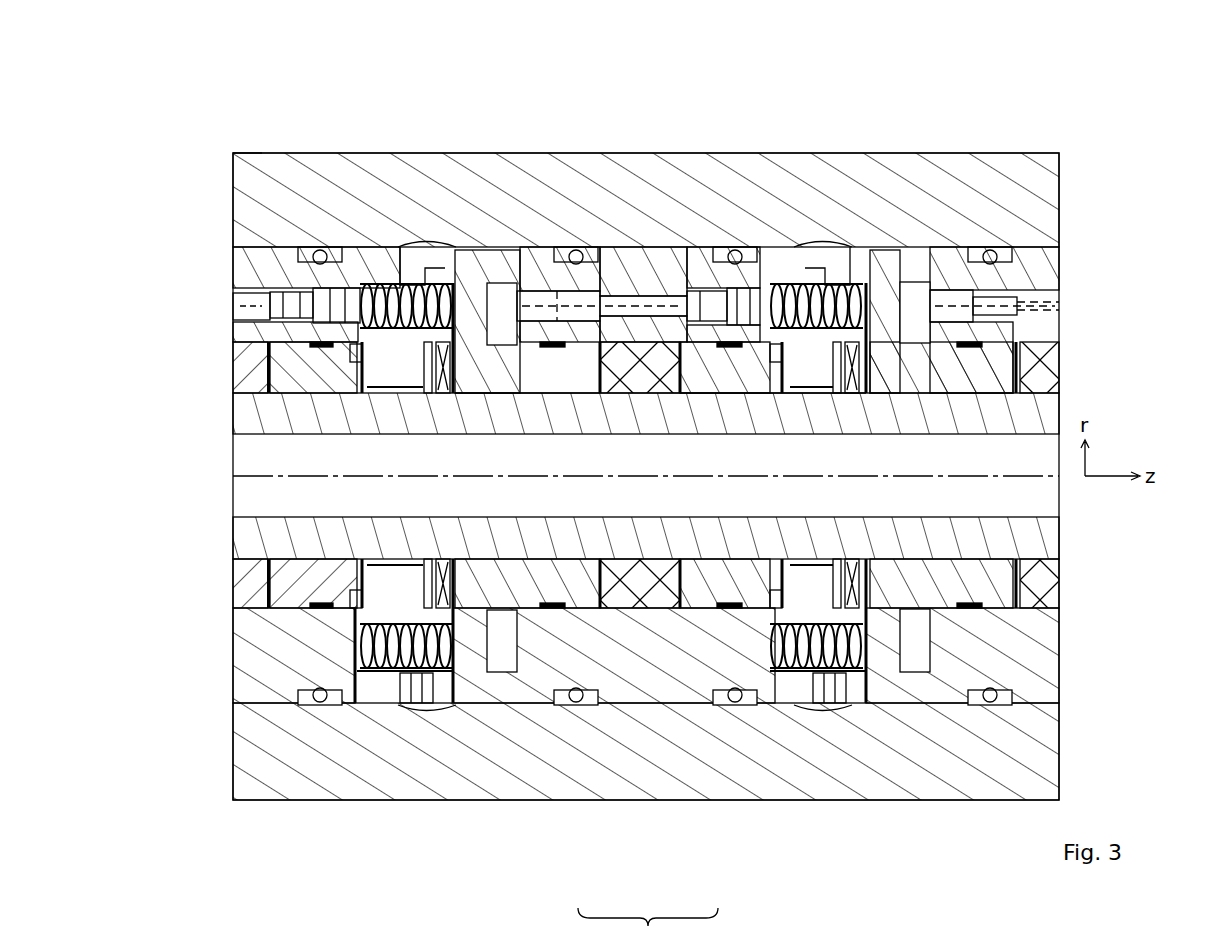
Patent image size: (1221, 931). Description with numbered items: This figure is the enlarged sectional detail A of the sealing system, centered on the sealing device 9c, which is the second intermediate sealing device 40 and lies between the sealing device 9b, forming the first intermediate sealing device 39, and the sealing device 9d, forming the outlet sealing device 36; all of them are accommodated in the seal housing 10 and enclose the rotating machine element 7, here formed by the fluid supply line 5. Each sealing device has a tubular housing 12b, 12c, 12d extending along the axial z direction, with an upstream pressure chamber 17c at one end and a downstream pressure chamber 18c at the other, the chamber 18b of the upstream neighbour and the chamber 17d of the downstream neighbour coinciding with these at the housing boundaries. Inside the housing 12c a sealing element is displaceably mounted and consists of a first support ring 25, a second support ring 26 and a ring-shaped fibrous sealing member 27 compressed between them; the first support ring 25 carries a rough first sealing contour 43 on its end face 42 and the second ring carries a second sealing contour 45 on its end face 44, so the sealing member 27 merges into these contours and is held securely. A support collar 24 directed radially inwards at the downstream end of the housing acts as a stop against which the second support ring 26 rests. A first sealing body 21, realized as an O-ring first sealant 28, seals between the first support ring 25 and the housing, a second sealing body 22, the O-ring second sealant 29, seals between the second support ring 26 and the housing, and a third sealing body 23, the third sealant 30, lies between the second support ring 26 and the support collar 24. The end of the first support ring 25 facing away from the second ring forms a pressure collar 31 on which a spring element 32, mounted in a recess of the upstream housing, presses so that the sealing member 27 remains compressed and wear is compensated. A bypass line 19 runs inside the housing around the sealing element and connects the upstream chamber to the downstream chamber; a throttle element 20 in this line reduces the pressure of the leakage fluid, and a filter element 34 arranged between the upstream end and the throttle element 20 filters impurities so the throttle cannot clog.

The section A is at (262, 152).
The seal housing 10 is at (270, 776).
The fluid supply line 5 is at (584, 476).
The machine element 7 is at (245, 424).
The sealing device 9b is at (252, 397).
The first intermediate sealing device 39 is at (275, 238).
The sealing device 9c is at (640, 189).
The second intermediate sealing device 40 is at (693, 255).
The sealing device 9d is at (1043, 387).
The outlet sealing device 36 is at (1028, 230).
The housing 12b is at (460, 391).
The housing 12c is at (640, 189).
The housing 12d is at (896, 374).
The upstream pressure chamber 17c is at (460, 391).
The downstream pressure chamber 18b is at (367, 260).
The downstream pressure chamber 18c is at (896, 374).
The upstream pressure chamber 17d is at (905, 262).
The bypass line 19 is at (650, 286).
The throttle element 20 is at (333, 283).
The spring element 32 is at (410, 283).
The filter element 34 is at (570, 291).
The end face 42 is at (584, 374).
The first sealing contour 43 is at (592, 380).
The end face 44 is at (748, 380).
The second sealing contour 45 is at (703, 375).
The support collar 24 is at (400, 585).
The first support ring 25 is at (1000, 585).
The second support ring 26 is at (320, 618).
The sealing member 27 is at (290, 596).
The first sealing body 21 is at (820, 602).
The first sealant 28 is at (975, 610).
The second sealing body 22 is at (438, 602).
The second sealant 29 is at (325, 612).
The third sealing body 23 is at (546, 579).
The third sealant 30 is at (400, 690).
The pressure collar 31 is at (465, 665).